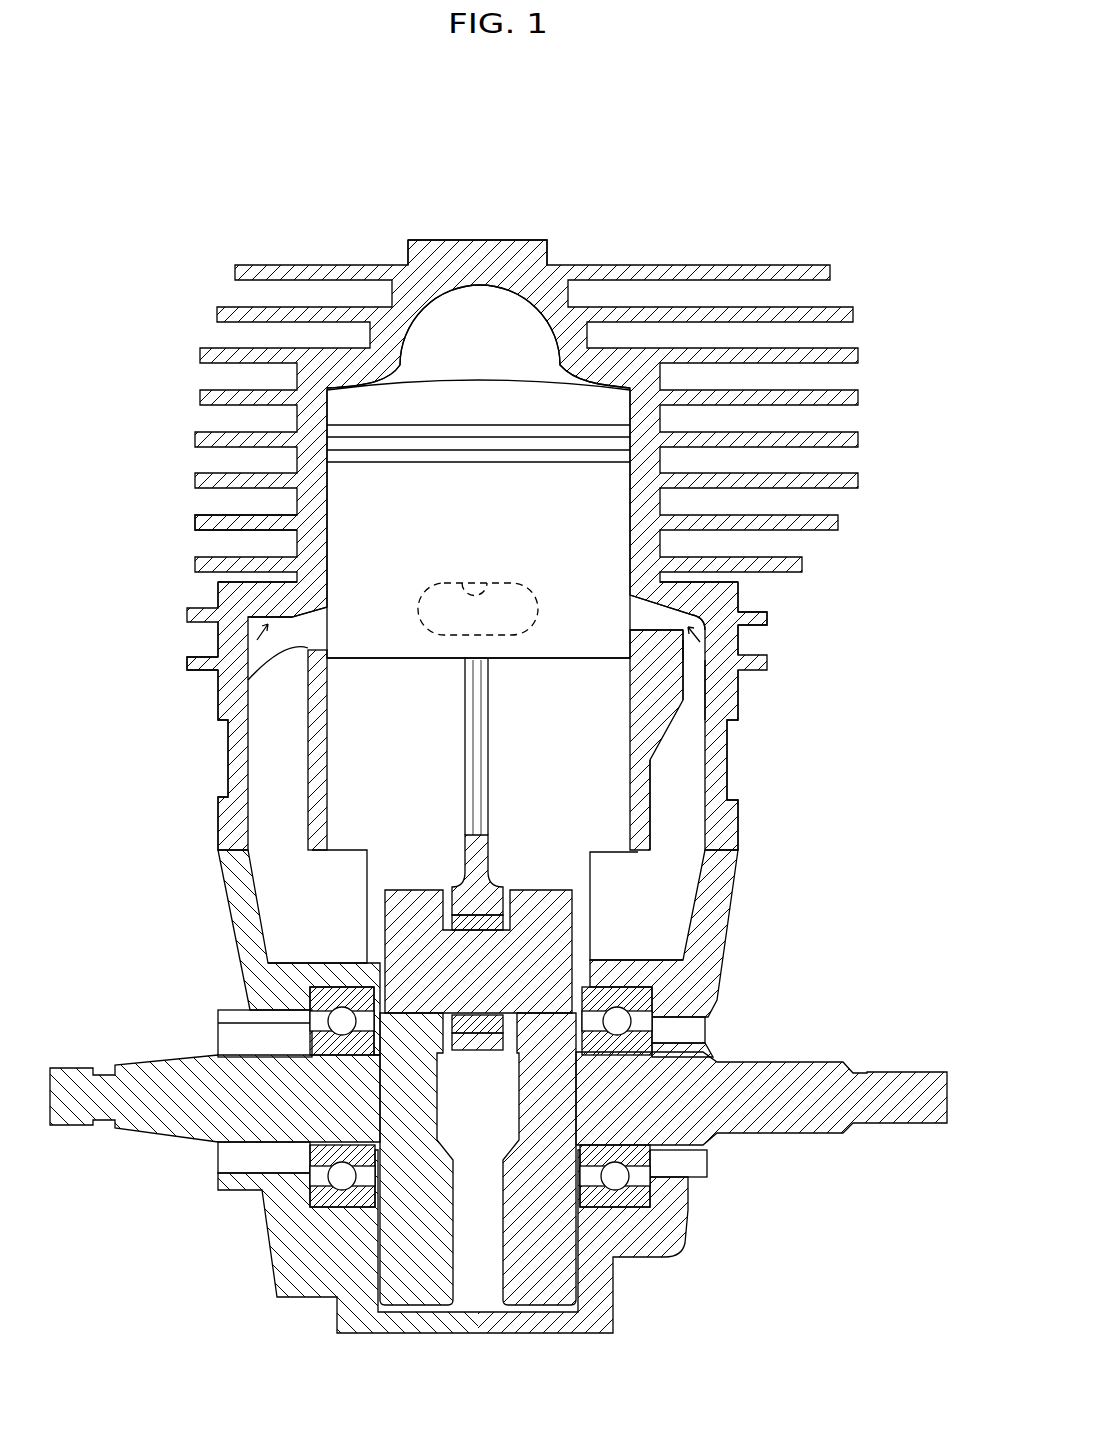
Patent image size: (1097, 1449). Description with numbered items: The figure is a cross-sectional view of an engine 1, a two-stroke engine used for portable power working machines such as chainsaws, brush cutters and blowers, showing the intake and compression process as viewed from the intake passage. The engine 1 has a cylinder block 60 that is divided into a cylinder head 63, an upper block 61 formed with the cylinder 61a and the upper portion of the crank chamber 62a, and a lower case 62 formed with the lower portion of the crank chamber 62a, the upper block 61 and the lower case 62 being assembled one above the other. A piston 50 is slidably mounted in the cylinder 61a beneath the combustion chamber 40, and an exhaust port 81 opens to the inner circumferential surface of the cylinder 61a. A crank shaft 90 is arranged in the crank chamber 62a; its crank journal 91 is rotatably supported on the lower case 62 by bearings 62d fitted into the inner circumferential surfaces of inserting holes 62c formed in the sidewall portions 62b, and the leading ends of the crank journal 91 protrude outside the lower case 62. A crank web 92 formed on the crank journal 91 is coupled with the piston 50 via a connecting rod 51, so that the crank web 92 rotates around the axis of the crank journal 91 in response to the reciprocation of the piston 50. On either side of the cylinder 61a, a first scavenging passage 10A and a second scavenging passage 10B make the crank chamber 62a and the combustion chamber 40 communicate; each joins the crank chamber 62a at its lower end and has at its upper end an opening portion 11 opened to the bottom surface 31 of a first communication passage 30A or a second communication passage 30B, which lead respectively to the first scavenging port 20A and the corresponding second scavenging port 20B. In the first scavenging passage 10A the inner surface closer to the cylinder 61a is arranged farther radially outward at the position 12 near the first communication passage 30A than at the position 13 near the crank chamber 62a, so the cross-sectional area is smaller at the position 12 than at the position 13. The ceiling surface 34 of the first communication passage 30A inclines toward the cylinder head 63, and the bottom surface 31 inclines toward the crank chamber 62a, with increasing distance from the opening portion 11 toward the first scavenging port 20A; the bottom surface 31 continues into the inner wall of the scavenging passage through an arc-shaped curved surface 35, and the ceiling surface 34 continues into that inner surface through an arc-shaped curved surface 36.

The engine 1 is at (365, 180).
The first scavenging passage 10A is at (738, 703).
The second scavenging passage 10B is at (222, 742).
The opening portion 11 is at (218, 677).
The position closer to the first communication passage 12 is at (690, 667).
The position closer to the crank chamber 13 is at (640, 790).
The first scavenging port 20A is at (618, 607).
The second scavenging passage 20B is at (338, 607).
The first communication passage 30A is at (737, 652).
The second communication passage 30B is at (222, 648).
The bottom surface 31 is at (320, 638).
The ceiling surface 34 is at (218, 598).
The arc-shaped curved surface 35 is at (712, 690).
The arc-shaped curved surface 36 is at (700, 624).
The combustion chamber 40 is at (470, 325).
The piston 50 is at (490, 405).
The connecting rod 51 is at (490, 800).
The cylinder block 60 is at (478, 776).
The upper block 61 is at (612, 370).
The cylinder 61a is at (297, 540).
The lower case 62 is at (680, 1265).
The crank chamber 62a is at (283, 868).
The sidewall portions 62b is at (285, 1193).
The inserting holes 62c is at (238, 1025).
The bearings 62d is at (323, 1190).
The cylinder head 63 is at (556, 292).
The exhaust port 81 is at (468, 583).
The crank shaft 90 is at (125, 1155).
The crank journal 91 is at (145, 1095).
The crank web 92 is at (397, 908).